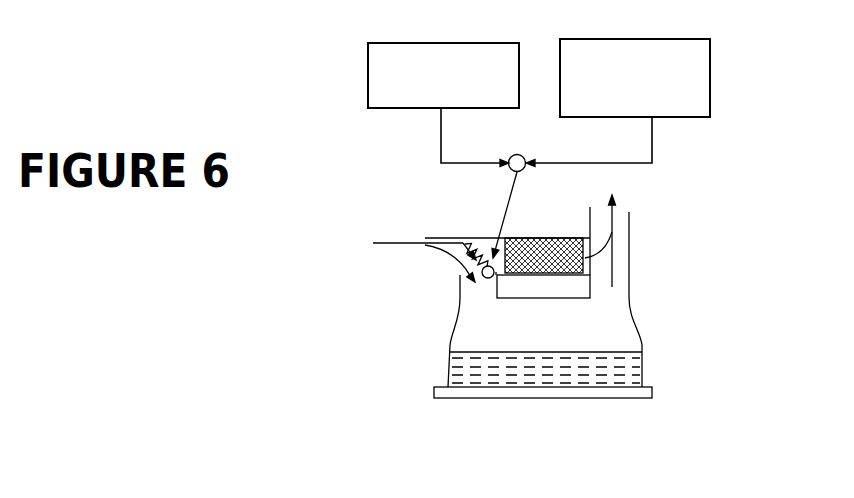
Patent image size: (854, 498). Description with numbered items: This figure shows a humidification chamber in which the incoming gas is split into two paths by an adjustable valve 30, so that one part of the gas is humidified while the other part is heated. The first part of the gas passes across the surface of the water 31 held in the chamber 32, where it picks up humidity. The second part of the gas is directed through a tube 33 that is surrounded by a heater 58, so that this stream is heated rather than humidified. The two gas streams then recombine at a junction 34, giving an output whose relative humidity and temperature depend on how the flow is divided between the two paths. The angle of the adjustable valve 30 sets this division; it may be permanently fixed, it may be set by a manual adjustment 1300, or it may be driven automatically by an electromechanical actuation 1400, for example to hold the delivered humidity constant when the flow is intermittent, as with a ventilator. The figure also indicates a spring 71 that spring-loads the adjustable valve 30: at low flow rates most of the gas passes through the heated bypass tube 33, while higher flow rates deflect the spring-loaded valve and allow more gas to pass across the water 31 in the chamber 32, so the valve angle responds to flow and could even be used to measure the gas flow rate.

The manual adjustment 1300 is at (368, 76).
The electromechanical actuation 1400 is at (672, 39).
The adjustable valve 30 is at (464, 238).
The spring 71 is at (487, 238).
The heater 58 is at (545, 243).
The tube 33 is at (528, 238).
The junction 34 is at (629, 217).
The chamber 32 is at (449, 320).
The water 31 is at (464, 366).